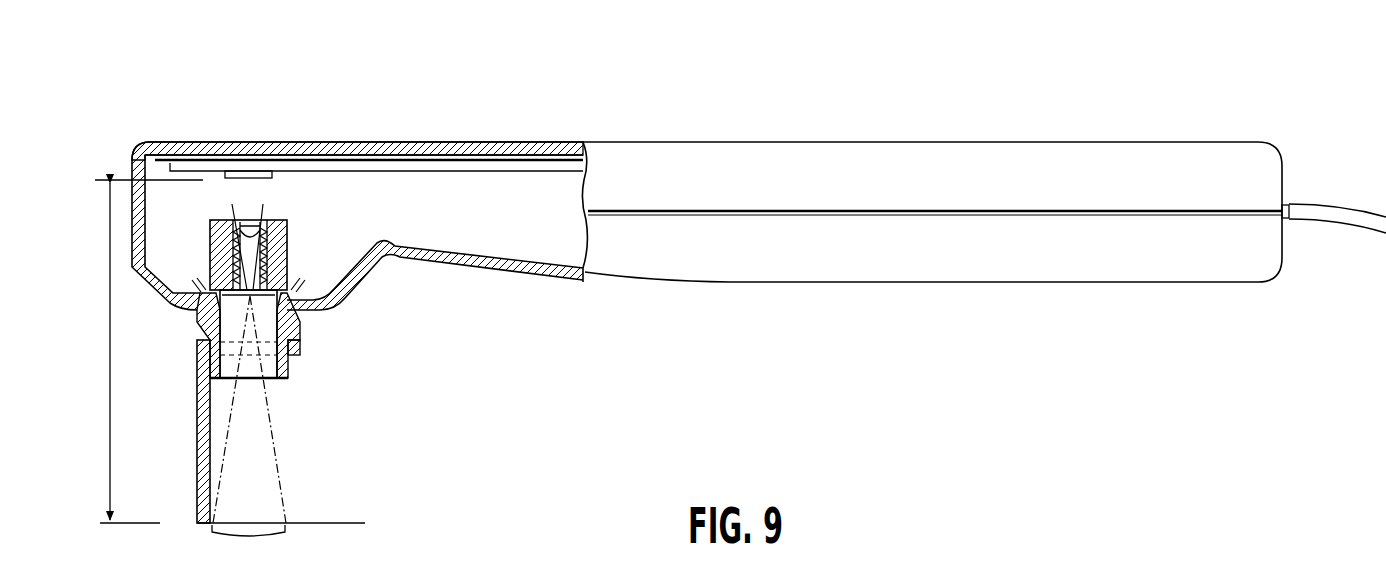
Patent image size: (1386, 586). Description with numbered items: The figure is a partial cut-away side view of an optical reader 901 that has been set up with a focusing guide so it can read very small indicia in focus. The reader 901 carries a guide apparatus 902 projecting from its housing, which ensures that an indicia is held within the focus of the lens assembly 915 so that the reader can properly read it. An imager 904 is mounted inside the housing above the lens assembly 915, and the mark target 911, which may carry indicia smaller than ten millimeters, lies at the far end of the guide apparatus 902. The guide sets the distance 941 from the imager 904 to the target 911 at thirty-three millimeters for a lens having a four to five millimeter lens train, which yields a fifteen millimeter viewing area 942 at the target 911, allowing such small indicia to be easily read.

The optical reader 901 is at (602, 98).
The guide apparatus 902 is at (197, 442).
The imager 904 is at (247, 172).
The mark target 911 is at (262, 520).
The lens assembly 915 is at (250, 210).
The distance 941 is at (130, 351).
The viewing area 942 is at (243, 536).